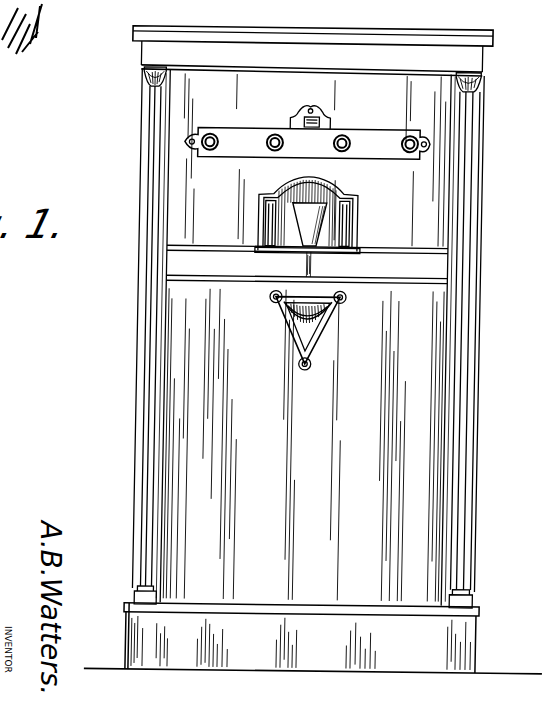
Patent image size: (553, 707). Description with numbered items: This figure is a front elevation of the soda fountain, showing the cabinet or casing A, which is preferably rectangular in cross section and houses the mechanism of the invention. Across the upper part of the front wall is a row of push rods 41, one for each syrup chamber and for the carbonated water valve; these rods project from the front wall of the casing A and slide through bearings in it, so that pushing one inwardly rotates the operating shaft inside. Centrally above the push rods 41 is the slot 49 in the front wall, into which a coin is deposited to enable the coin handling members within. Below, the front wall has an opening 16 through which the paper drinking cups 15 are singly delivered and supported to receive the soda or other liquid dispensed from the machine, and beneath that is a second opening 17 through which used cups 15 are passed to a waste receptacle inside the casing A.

The push rods 41 is at (268, 137).
The slot 49 is at (310, 114).
The paper drinking cups 15 is at (303, 218).
The opening 16 is at (332, 225).
The opening 17 is at (334, 290).
The cabinet or casing A is at (409, 356).